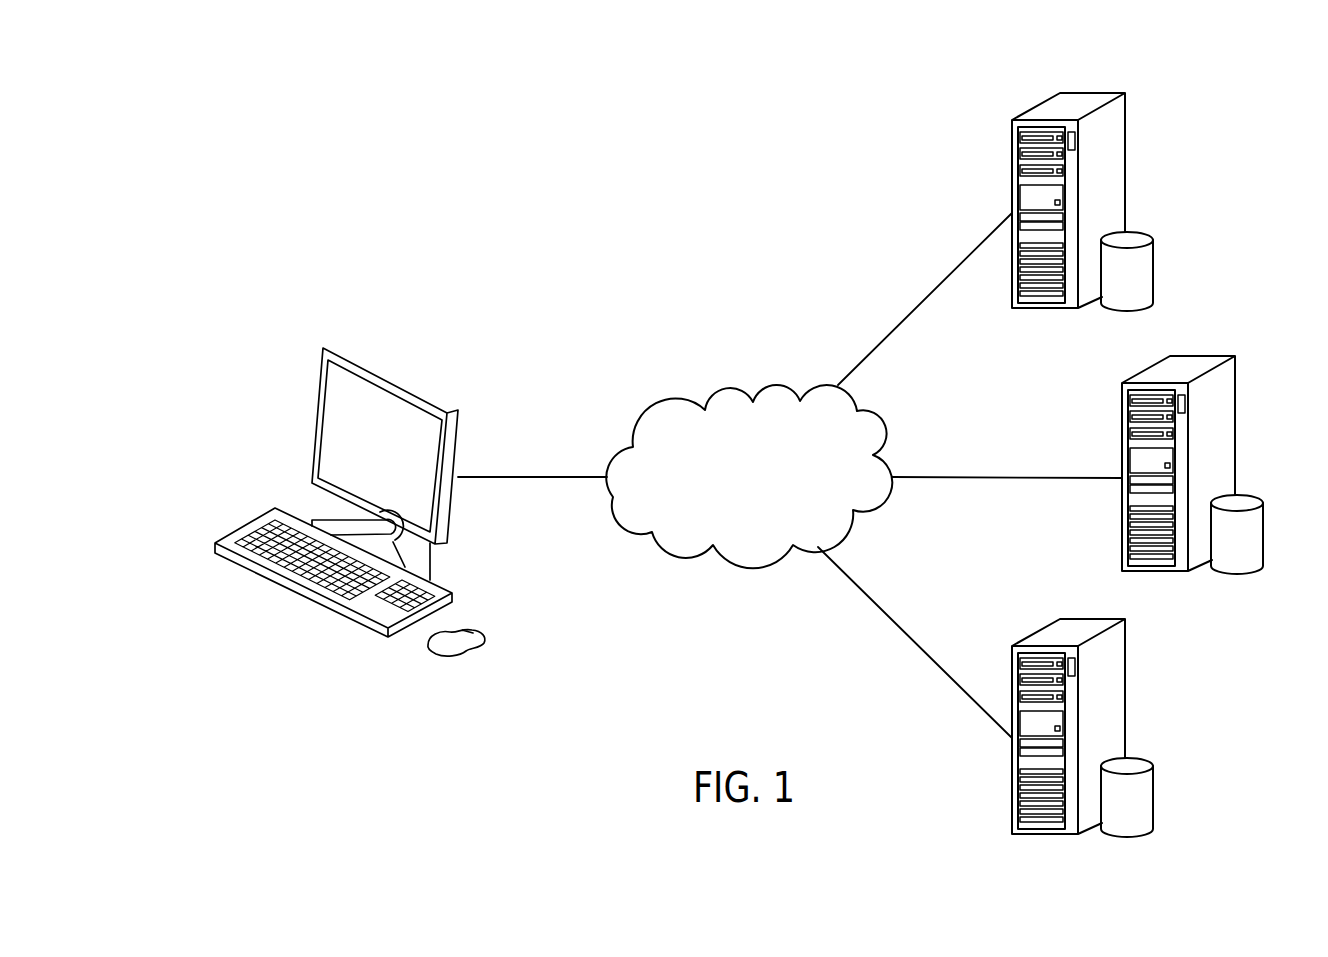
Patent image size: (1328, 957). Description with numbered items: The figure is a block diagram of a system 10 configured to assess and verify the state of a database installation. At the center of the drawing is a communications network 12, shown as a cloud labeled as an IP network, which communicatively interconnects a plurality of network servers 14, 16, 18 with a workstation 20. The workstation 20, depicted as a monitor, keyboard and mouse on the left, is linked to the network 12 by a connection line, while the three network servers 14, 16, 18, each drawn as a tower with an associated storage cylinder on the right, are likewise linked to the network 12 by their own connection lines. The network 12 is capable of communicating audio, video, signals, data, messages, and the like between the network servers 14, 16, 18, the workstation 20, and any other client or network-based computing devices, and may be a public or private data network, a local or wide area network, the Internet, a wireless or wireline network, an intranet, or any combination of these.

The system 10 is at (503, 195).
The communications network 12 is at (730, 386).
The network server 14 is at (1117, 167).
The network server 16 is at (1225, 430).
The network server 18 is at (1117, 693).
The workstation 20 is at (272, 384).